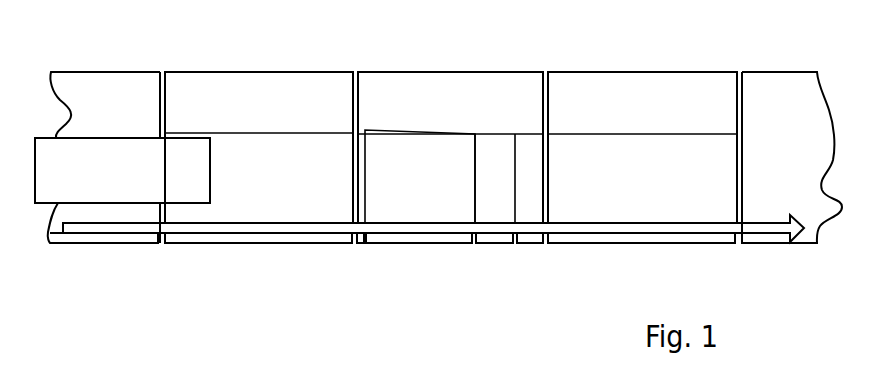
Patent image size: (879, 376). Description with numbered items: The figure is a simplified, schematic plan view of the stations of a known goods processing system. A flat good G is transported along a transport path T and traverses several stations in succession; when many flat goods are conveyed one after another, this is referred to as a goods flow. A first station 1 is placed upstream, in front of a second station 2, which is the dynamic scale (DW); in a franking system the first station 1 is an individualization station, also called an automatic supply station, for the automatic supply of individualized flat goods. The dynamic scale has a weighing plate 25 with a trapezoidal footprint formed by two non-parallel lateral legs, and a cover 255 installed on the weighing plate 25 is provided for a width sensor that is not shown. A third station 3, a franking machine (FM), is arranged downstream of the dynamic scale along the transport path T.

The first station 1 is at (290, 87).
The second station 2 is at (478, 92).
The third station 3 is at (683, 88).
The weighing plate 25 is at (427, 200).
The cover 255 is at (492, 205).
The flat good G is at (112, 188).
The transport path T is at (243, 228).